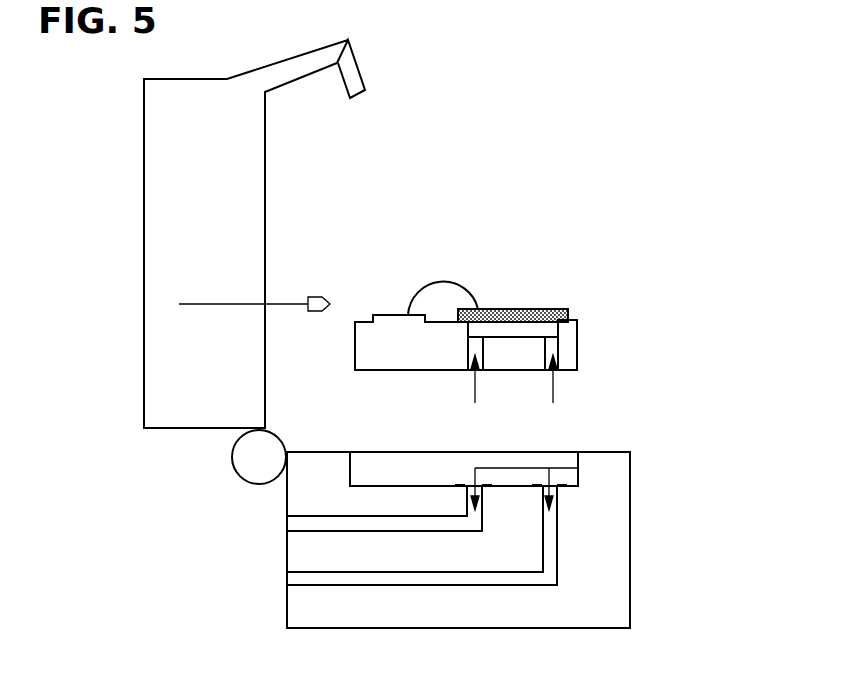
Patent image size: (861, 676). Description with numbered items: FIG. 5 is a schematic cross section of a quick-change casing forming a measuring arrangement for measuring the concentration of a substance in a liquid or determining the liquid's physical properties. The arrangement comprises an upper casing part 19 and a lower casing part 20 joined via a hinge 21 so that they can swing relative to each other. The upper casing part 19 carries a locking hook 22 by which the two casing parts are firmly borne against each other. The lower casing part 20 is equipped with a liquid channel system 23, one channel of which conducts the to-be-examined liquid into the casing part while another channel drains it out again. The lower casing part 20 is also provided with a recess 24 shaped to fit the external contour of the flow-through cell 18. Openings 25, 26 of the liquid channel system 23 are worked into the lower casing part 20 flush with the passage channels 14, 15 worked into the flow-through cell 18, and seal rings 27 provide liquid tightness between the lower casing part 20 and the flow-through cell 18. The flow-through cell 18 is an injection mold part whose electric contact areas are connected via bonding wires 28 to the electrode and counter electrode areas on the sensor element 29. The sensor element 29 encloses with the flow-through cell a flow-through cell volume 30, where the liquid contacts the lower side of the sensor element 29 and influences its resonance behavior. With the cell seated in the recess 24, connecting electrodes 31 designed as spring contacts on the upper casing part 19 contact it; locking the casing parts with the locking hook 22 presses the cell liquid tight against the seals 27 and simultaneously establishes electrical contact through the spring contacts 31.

The passage channel 14 is at (553, 403).
The passage channel 15 is at (475, 403).
The flow-through cell 18 is at (556, 279).
The upper casing part 19 is at (143, 213).
The lower casing part 20 is at (432, 521).
The hinge 21 is at (240, 476).
The locking hook 22 is at (365, 78).
The liquid channel system 23 is at (287, 520).
The recess 24 is at (562, 449).
The opening 25 is at (578, 468).
The opening 26 is at (549, 489).
The seal rings 27 is at (560, 483).
The bonding wires 28 is at (457, 282).
The sensor element 29 is at (568, 308).
The flow-through cell volume 30 is at (547, 329).
The connecting electrodes 31 is at (289, 304).